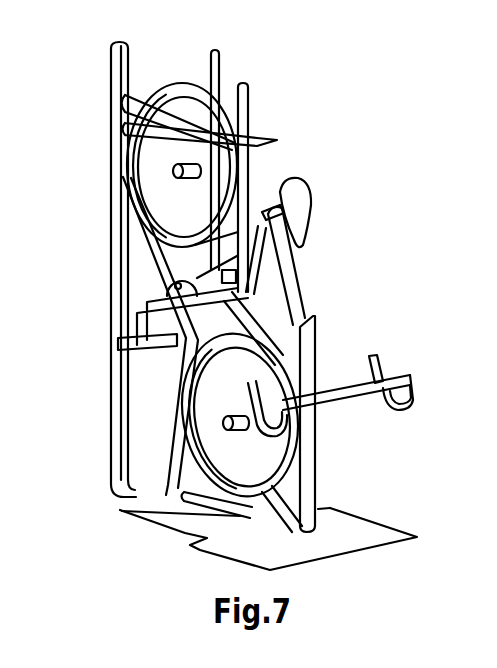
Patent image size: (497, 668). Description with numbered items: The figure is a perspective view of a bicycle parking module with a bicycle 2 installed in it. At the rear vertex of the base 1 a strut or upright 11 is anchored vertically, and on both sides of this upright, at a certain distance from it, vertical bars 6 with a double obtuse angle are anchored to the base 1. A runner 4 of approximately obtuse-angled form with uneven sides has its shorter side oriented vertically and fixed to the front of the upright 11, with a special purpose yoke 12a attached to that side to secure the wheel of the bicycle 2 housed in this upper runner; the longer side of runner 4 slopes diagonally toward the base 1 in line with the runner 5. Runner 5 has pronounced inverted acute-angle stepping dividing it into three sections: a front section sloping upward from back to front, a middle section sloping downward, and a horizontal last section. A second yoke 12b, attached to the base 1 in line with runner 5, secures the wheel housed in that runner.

The base 1 is at (372, 527).
The bicycle 2 is at (291, 300).
The runner 4 is at (160, 272).
The runner 5 is at (227, 511).
The vertical bars 6 is at (248, 102).
The strut or upright 11 is at (111, 250).
The yoke 12a is at (168, 100).
The second yoke 12b is at (183, 370).